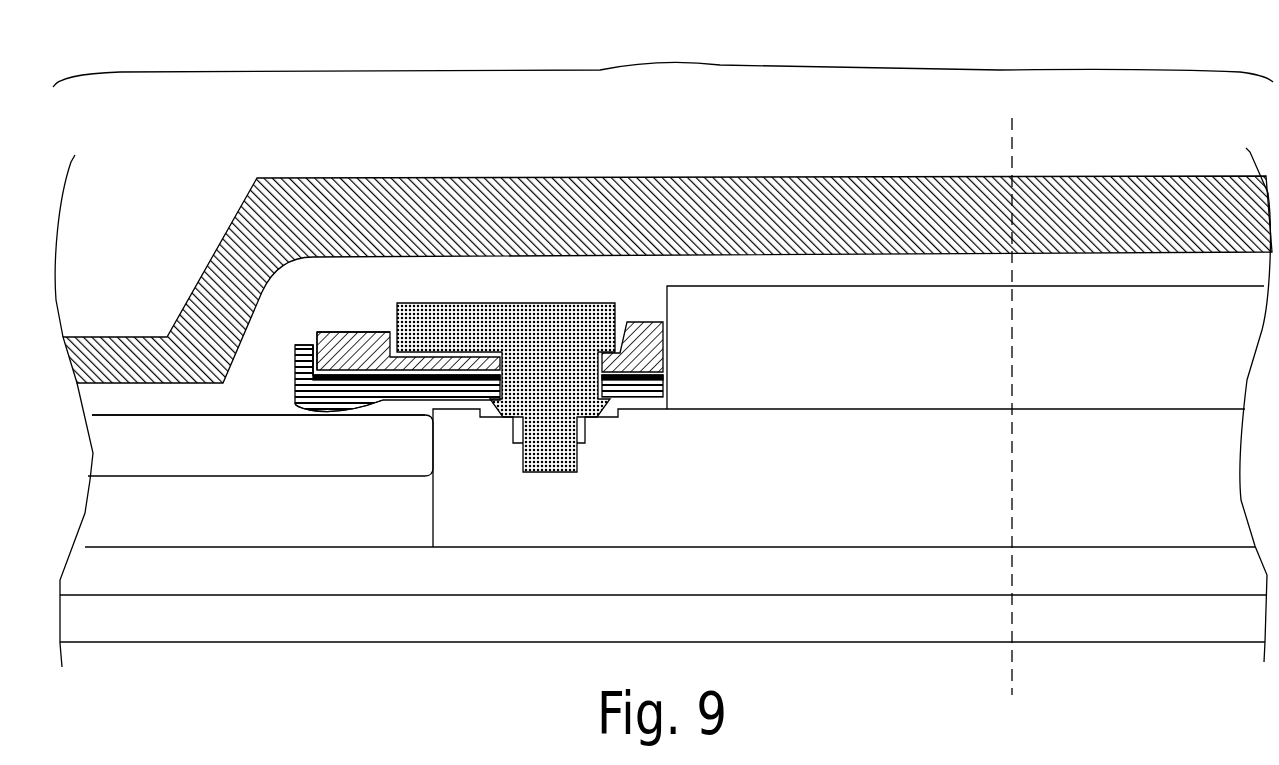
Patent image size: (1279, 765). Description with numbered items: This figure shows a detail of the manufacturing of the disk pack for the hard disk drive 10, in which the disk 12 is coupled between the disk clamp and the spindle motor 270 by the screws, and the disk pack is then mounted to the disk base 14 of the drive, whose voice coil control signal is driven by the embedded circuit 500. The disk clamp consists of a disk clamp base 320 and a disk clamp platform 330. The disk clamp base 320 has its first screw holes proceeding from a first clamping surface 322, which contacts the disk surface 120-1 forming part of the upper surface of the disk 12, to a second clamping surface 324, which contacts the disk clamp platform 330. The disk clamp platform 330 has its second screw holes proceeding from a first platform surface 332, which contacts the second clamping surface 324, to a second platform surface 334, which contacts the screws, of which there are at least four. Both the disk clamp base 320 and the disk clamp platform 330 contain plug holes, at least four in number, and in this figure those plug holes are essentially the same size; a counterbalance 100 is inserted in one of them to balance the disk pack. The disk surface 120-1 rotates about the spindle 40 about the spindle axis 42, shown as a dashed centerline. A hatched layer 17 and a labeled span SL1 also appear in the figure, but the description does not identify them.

The hard disk drive 10 is at (663, 52).
The pixel defining layer 17 is at (652, 178).
The spindle axis 42 is at (1010, 137).
The spindle 40 is at (876, 357).
The disk 12 is at (301, 459).
The disk surface 120-1 is at (222, 421).
The spindle motor 270 is at (840, 503).
The disk base 14 is at (683, 583).
The embedded circuit 500 is at (688, 629).
The disk clamp base 320 is at (354, 406).
The disk clamp platform 330 is at (364, 363).
The second platform surface 334 is at (390, 328).
The first platform surface 332 is at (317, 330).
The second clamping surface 324 is at (308, 345).
The first clamping surface 322 is at (293, 405).
The counterbalance 100 is at (493, 303).
The first sensing line SL1 is at (603, 296).